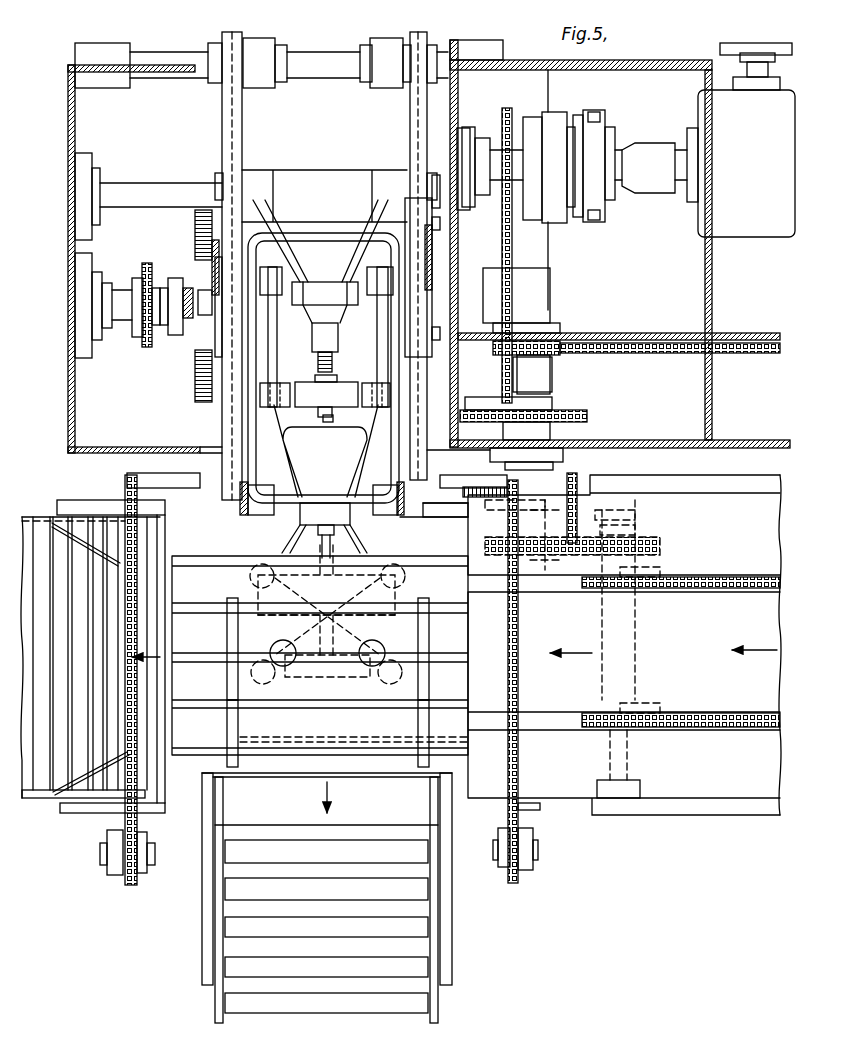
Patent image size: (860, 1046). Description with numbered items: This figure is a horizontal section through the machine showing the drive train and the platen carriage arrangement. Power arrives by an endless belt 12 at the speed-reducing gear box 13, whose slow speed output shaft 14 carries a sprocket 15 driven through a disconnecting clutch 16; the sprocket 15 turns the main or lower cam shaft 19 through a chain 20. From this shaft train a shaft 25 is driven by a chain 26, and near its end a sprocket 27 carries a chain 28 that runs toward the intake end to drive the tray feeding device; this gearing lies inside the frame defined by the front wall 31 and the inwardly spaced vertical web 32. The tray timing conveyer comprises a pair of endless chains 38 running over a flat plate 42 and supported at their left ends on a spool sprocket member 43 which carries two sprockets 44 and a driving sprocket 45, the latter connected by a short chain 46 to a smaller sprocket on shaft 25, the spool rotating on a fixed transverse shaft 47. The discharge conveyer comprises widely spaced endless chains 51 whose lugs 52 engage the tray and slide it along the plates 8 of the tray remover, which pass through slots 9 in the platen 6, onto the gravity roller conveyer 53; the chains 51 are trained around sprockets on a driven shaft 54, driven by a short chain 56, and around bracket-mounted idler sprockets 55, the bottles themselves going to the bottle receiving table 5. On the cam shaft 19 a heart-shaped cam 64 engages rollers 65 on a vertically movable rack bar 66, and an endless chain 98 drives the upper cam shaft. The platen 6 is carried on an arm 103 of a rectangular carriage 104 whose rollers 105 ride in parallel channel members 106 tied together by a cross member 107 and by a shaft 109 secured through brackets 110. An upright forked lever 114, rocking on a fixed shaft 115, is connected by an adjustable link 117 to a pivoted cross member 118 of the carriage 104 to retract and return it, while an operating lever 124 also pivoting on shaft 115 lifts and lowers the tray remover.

The bottle receiving table 5 is at (47, 778).
The platen 6 is at (199, 572).
The plates 8 is at (238, 723).
The slots 9 is at (227, 682).
The endless belt 12 is at (720, 49).
The speed-reducing gear box 13 is at (770, 238).
The slow speed output shaft 14 is at (681, 140).
The sprocket 15 is at (500, 118).
The disconnecting clutch 16 is at (600, 120).
The main or lower cam shaft 19 is at (120, 322).
The chain 20 is at (512, 268).
The shaft 25 is at (553, 380).
The chain 26 is at (587, 419).
The sprocket 27 is at (560, 343).
The chain 28 is at (655, 356).
The front wall 31 is at (645, 449).
The vertical web 32 is at (645, 333).
The endless chains 38 is at (705, 590).
The flat plate 42 is at (742, 505).
The spool sprocket member 43 is at (635, 666).
The sprockets 44 is at (645, 590).
The driving sprocket 45 is at (662, 541).
The short chain 46 is at (573, 555).
The fixed transverse shaft 47 is at (630, 756).
The endless chains 51 is at (140, 640).
The lugs 52 is at (192, 473).
The roller conveyer 53 is at (405, 899).
The driven shaft 54 is at (443, 518).
The idler sprockets 55 is at (125, 882).
The short chain 56 is at (565, 478).
The heart-shaped cam 64 is at (195, 396).
The rollers 65 is at (190, 318).
The rack bar 66 is at (185, 335).
The endless chain 98 is at (145, 345).
The arm 103 is at (292, 548).
The rectangular carriage 104 is at (253, 420).
The rollers 105 is at (195, 243).
The channel members 106 is at (243, 130).
The cross member 107 is at (212, 258).
The shaft 109 is at (193, 51).
The brackets 110 is at (280, 42).
The upright forked lever 114 is at (337, 282).
The fixed shaft 115 is at (152, 183).
The adjustable link 117 is at (336, 332).
The pivoted cross member 118 is at (308, 385).
The operating lever 124 is at (338, 220).